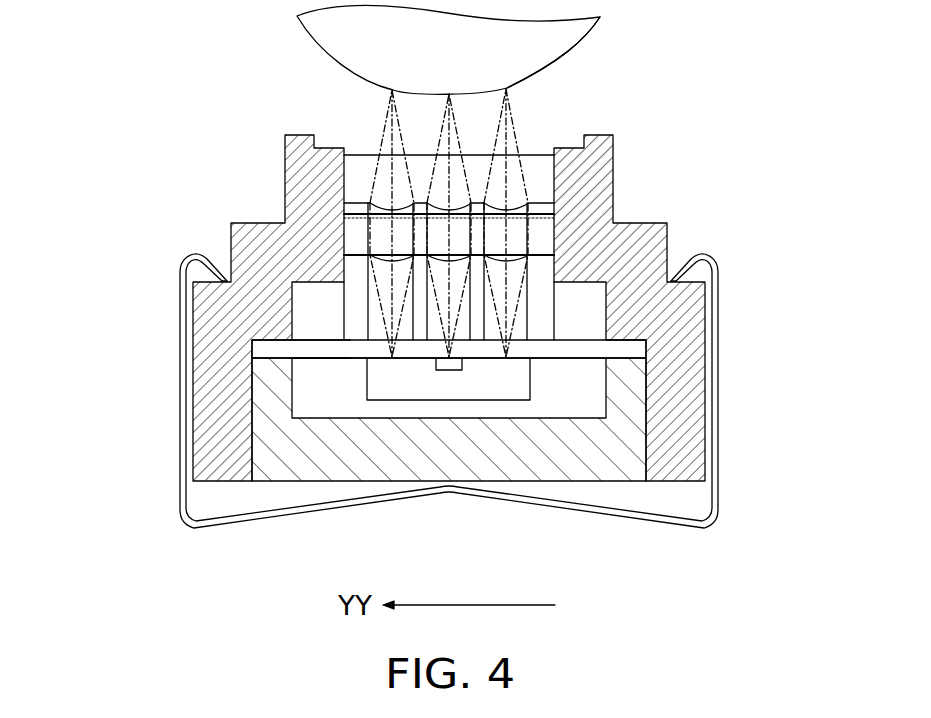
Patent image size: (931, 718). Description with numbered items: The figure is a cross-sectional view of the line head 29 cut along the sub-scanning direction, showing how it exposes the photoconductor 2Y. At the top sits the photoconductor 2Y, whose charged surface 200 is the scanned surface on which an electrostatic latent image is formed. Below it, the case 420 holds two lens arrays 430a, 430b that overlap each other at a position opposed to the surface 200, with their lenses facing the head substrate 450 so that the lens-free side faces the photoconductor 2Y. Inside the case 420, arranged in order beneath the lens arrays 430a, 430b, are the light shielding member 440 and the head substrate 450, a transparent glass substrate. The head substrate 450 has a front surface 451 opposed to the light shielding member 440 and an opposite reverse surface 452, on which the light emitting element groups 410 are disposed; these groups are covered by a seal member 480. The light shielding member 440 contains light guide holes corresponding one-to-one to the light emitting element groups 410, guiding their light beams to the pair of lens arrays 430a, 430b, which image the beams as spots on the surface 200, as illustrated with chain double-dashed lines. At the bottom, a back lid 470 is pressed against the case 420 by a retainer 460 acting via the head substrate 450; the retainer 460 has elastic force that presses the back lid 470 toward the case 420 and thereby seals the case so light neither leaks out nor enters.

The surface 200 is at (313, 49).
The photoconductor 2Y is at (575, 43).
The line head 29 is at (692, 73).
The light emitting element group 410 is at (447, 363).
The case 420 is at (657, 245).
The lens array 430a is at (540, 170).
The lens array 430b is at (540, 240).
The light shielding member 440 is at (540, 310).
The head substrate 450 is at (622, 350).
The front surface 451 is at (317, 336).
The reverse surface 452 is at (317, 370).
The retainer 460 is at (715, 418).
The back lid 470 is at (522, 463).
The seal member 480 is at (387, 388).